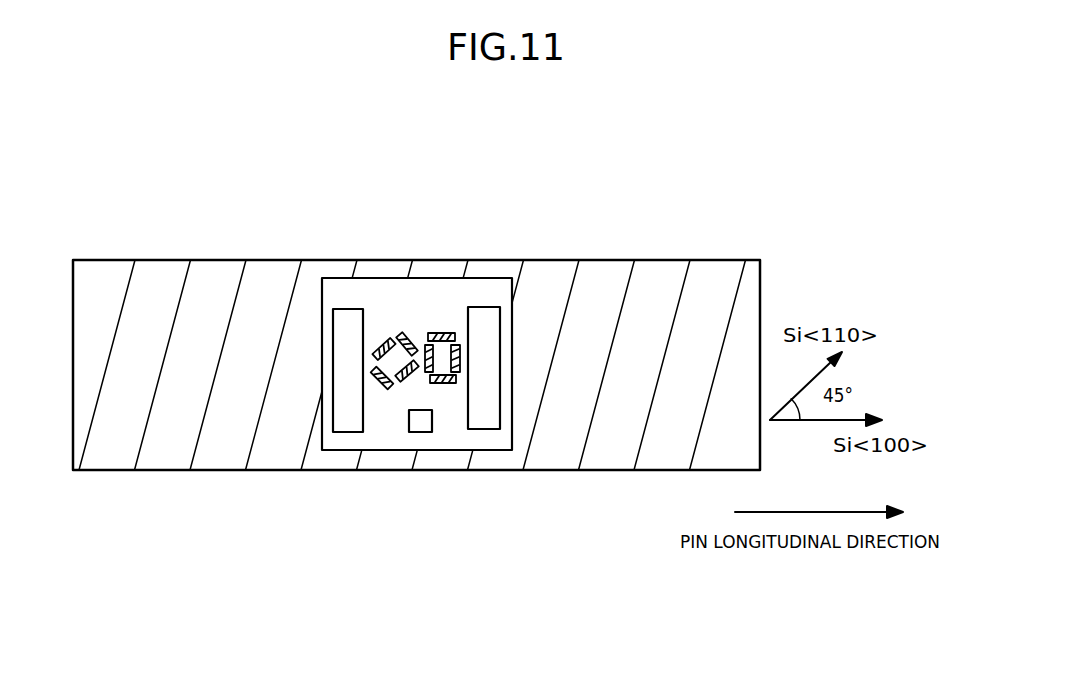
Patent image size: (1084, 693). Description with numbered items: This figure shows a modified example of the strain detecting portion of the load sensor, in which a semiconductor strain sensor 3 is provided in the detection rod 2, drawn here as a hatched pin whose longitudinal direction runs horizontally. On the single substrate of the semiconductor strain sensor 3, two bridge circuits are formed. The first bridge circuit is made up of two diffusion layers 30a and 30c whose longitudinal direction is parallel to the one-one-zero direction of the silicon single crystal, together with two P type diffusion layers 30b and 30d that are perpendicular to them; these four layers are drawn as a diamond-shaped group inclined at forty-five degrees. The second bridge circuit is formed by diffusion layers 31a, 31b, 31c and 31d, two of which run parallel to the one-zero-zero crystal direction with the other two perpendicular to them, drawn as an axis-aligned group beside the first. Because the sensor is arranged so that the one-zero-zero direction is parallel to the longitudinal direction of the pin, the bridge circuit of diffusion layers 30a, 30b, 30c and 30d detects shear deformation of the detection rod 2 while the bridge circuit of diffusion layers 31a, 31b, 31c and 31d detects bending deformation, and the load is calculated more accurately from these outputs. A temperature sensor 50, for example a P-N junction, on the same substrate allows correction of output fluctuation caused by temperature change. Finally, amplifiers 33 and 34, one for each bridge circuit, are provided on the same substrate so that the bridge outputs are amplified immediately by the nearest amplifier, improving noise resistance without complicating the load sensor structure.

The detection rod 2 is at (416, 298).
The semiconductor strain sensor 3 is at (417, 271).
The diffusion layer 30a is at (391, 264).
The diffusion layer 30b is at (387, 446).
The diffusion layer 30c is at (344, 458).
The diffusion layer 30d is at (364, 292).
The diffusion layer 31a is at (491, 288).
The diffusion layer 31b is at (488, 431).
The diffusion layer 31c is at (465, 451).
The diffusion layer 31d is at (459, 252).
The amplifier 33 is at (541, 420).
The amplifier 34 is at (289, 428).
The temperature sensor 50 is at (436, 502).